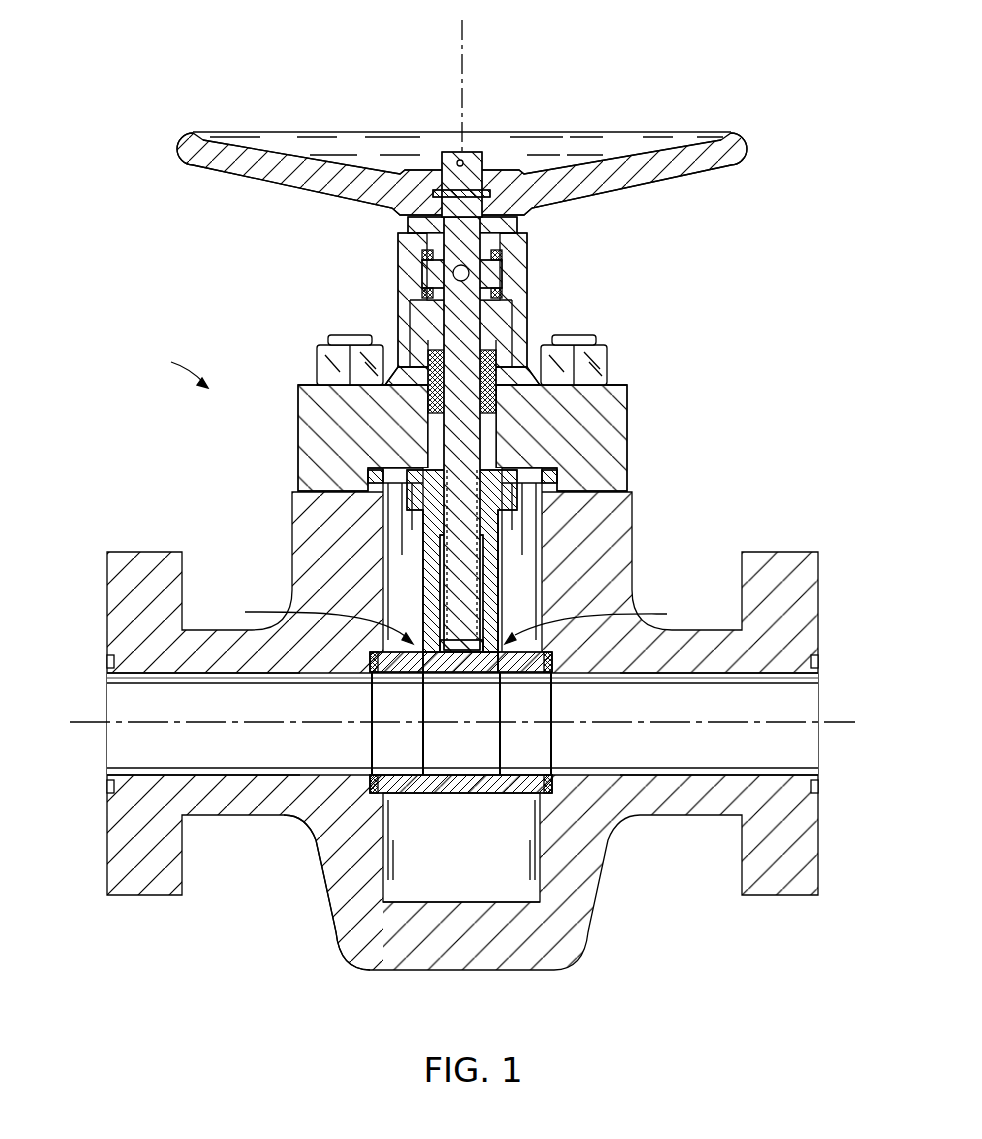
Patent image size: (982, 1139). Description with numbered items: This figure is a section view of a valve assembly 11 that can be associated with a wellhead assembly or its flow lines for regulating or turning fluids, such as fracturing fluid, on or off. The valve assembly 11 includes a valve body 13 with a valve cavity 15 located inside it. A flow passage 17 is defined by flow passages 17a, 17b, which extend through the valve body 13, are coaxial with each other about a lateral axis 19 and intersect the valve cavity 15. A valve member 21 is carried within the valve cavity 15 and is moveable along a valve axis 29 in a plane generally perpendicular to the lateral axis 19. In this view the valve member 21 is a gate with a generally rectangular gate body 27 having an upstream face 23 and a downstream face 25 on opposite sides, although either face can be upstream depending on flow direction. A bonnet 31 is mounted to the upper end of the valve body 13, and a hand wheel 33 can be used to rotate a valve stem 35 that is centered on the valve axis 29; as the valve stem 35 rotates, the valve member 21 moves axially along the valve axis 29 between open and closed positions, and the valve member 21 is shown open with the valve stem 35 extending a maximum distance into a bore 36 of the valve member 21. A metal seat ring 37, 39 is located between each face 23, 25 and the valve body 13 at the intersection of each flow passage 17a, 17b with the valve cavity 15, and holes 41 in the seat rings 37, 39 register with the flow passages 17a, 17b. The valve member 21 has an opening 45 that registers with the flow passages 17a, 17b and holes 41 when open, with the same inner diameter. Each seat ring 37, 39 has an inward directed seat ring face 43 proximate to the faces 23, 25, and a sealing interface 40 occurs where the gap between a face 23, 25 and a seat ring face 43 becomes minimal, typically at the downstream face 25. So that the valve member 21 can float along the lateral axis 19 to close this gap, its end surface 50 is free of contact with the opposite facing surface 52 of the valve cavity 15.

The valve assembly 11 is at (175, 368).
The valve body 13 is at (292, 517).
The valve cavity 15 is at (522, 853).
The flow passage 17 is at (216, 768).
The flow passage 17a is at (150, 768).
The flow passage 17b is at (785, 770).
The lateral axis 19 is at (834, 720).
The valve member 21 is at (498, 557).
The upstream face 23 is at (421, 587).
The downstream face 25 is at (490, 606).
The gate body 27 is at (299, 448).
The valve axis 29 is at (467, 48).
The bonnet 31 is at (626, 394).
The hand wheel 33 is at (748, 155).
The valve stem 35 is at (470, 345).
The bore 36 is at (501, 578).
The seat ring 37 is at (388, 744).
The seat ring 39 is at (525, 744).
The sealing interface 40 is at (458, 620).
The holes 41 is at (523, 680).
The seat ring face 43 is at (338, 912).
The opening 45 is at (482, 680).
The end surface 50 is at (488, 785).
The opposite facing surface 52 is at (430, 893).